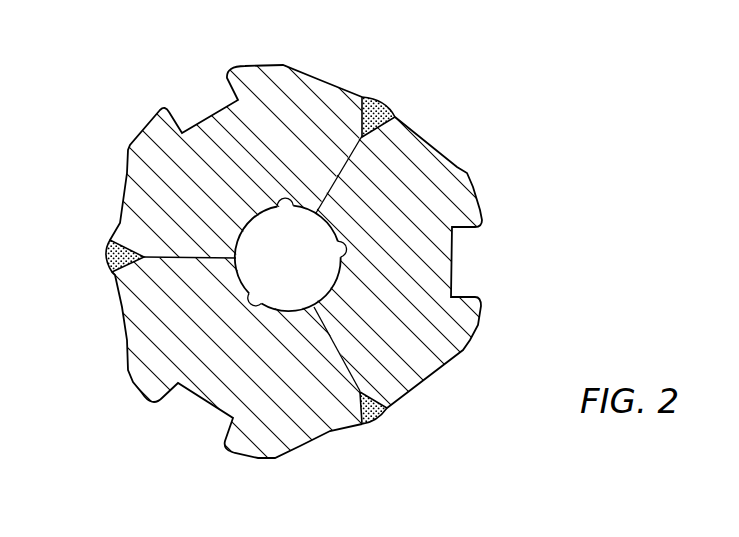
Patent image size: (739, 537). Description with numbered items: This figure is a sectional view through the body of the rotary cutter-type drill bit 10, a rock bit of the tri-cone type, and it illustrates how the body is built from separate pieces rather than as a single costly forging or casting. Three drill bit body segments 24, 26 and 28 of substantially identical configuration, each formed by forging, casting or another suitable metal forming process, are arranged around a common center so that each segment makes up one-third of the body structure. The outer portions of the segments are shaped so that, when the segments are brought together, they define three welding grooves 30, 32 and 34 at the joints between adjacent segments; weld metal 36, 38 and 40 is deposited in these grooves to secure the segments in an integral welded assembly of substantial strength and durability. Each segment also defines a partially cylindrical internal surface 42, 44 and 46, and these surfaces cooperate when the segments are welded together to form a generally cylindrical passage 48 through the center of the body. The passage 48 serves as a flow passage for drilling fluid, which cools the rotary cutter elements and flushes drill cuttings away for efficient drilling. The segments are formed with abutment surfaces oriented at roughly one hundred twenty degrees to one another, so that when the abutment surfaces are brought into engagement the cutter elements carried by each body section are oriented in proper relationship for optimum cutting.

The rotary cutter-type drill bit 10 is at (369, 268).
The drill bit body segment 24 is at (153, 170).
The drill bit body segment 26 is at (152, 357).
The drill bit body segment 28 is at (438, 177).
The welding groove 30 is at (110, 268).
The welding groove 32 is at (386, 416).
The welding groove 34 is at (390, 110).
The weld metal 36 is at (110, 248).
The weld metal 38 is at (372, 426).
The weld metal 40 is at (375, 96).
The partially cylindrical internal surface 42 is at (278, 205).
The partially cylindrical internal surface 44 is at (263, 302).
The partially cylindrical internal surface 46 is at (343, 258).
The cylindrical passage 48 is at (277, 269).